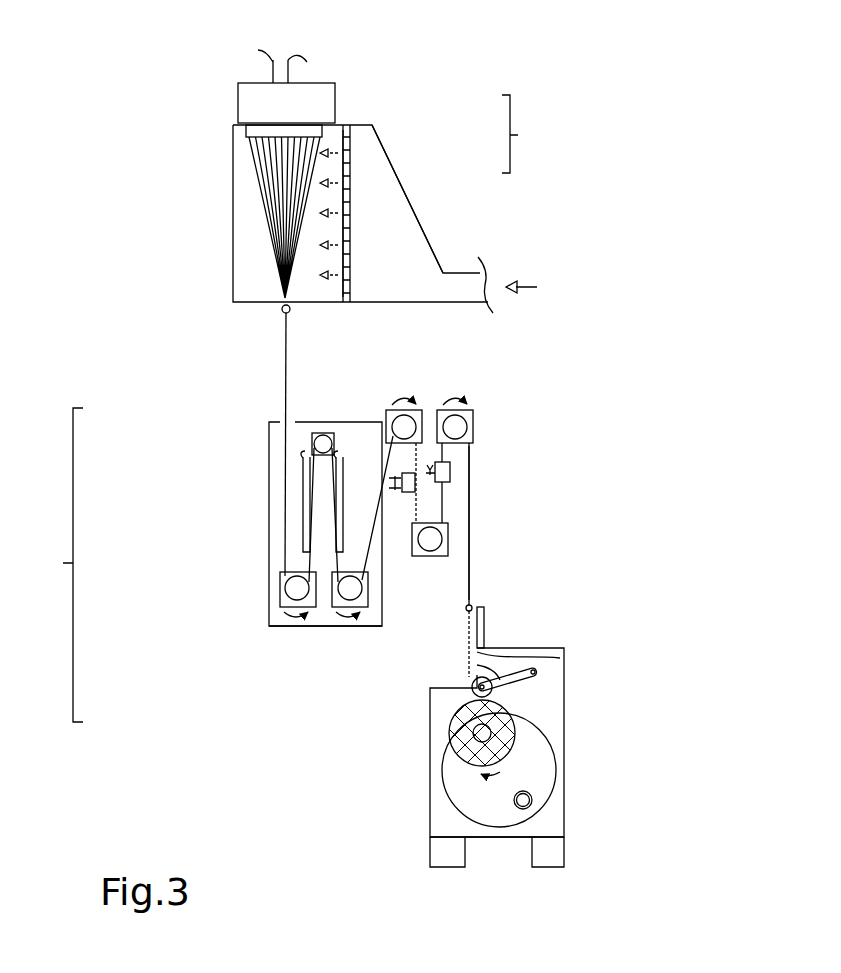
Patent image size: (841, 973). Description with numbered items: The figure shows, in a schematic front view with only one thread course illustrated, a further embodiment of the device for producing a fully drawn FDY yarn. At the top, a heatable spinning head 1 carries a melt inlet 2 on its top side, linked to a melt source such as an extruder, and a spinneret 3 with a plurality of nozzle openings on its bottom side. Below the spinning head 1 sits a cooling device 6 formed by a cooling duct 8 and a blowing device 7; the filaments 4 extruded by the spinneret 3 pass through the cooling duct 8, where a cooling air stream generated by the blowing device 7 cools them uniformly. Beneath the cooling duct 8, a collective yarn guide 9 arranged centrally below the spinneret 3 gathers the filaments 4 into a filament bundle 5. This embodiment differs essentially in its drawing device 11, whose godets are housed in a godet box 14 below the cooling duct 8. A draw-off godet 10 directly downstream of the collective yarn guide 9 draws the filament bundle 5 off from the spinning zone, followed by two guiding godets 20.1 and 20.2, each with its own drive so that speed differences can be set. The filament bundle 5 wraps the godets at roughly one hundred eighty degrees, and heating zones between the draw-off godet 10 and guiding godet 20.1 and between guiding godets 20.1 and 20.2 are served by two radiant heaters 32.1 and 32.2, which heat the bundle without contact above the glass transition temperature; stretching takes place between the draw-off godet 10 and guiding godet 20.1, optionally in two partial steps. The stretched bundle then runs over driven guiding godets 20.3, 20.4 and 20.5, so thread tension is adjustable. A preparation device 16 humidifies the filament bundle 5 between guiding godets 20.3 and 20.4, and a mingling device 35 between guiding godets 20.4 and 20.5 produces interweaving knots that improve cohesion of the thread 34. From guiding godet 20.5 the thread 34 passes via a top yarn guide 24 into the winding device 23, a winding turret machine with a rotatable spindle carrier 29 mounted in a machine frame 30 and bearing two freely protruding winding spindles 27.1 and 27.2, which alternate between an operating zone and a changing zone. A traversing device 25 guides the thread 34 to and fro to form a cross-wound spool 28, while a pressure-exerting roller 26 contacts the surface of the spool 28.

The spinning head 1 is at (252, 98).
The melt inlet 2 is at (273, 70).
The spinneret 3 is at (263, 133).
The filaments 4 is at (265, 212).
The filament bundle 5 is at (285, 370).
The cooling device 6 is at (524, 134).
The blowing device 7 is at (392, 207).
The cooling duct 8 is at (332, 172).
The collective yarn guide 9 is at (283, 309).
The draw-off godet 10 is at (297, 588).
The drawing device 11 is at (200, 565).
The godet box 14 is at (341, 633).
The preparation device 16 is at (417, 488).
The guiding godet 20.1 is at (323, 444).
The guiding godet 20.2 is at (349, 591).
The guiding godet 20.3 is at (414, 408).
The guiding godet 20.4 is at (433, 542).
The guiding godet 20.5 is at (460, 425).
The winding device 23 is at (423, 707).
The top yarn guide 24 is at (470, 604).
The traversing device 25 is at (560, 658).
The pressure-exerting roller 26 is at (510, 695).
The winding spindle 27.1 is at (525, 745).
The winding spindle 27.2 is at (525, 802).
The spool 28 is at (467, 750).
The spindle carrier 29 is at (467, 797).
The machine frame 30 is at (528, 832).
The radiant heater 32.1 is at (303, 483).
The radiant heater 32.2 is at (335, 530).
The thread 34 is at (470, 463).
The mingling device 35 is at (450, 473).